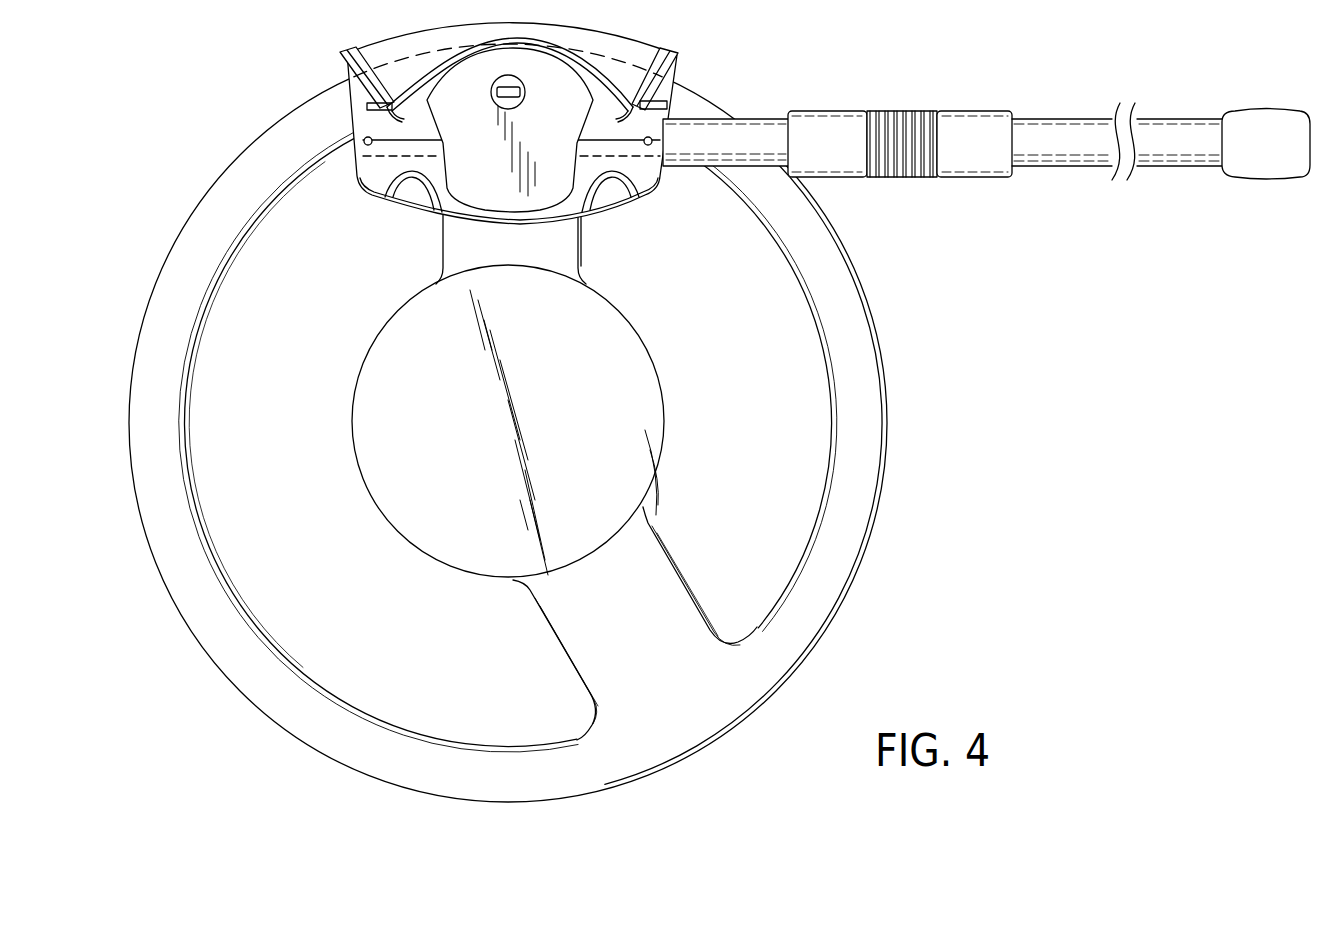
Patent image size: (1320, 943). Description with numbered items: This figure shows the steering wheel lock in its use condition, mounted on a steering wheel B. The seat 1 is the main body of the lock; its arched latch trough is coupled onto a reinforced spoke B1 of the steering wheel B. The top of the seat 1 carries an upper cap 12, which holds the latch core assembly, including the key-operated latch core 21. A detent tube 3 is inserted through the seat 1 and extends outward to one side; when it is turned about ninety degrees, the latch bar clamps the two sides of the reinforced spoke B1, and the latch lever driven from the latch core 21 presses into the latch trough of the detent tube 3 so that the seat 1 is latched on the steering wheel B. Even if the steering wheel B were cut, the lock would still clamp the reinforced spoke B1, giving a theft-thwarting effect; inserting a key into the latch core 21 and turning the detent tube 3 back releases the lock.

The seat 1 is at (665, 88).
The upper cap 12 is at (470, 136).
The latch core 21 is at (494, 86).
The detent tube 3 is at (975, 150).
The steering wheel B is at (850, 393).
The reinforced spoke B1 is at (652, 589).